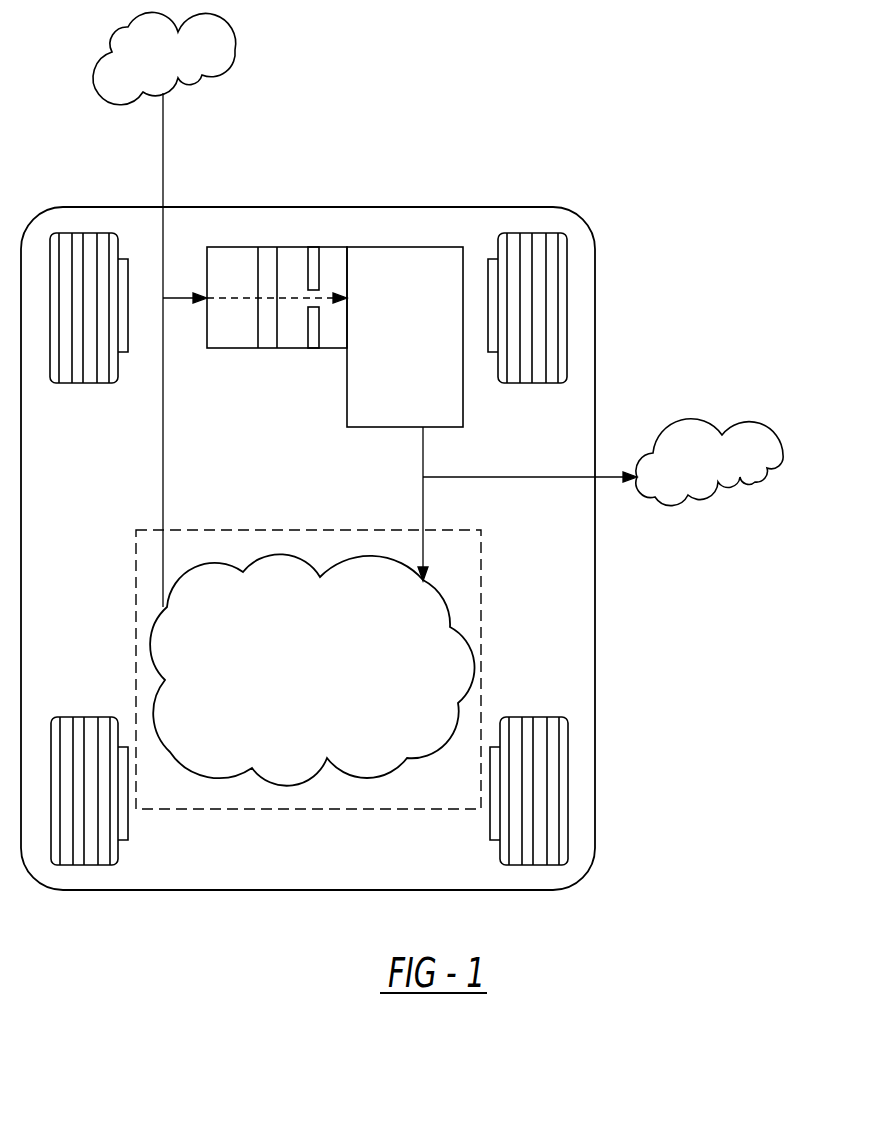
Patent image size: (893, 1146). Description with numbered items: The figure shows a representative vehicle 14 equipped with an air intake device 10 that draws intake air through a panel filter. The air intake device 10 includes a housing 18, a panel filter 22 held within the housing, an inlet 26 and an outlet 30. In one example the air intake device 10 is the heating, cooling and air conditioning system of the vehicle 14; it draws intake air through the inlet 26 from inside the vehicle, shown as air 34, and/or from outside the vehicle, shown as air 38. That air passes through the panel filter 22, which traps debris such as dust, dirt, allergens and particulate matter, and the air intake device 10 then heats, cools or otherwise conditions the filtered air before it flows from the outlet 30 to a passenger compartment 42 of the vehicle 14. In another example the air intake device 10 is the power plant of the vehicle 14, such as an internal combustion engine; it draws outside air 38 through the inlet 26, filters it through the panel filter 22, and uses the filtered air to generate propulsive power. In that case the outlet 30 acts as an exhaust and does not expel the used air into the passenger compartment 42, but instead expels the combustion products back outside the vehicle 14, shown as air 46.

The air intake device 10 is at (351, 237).
The vehicle 14 is at (488, 207).
The housing 18 is at (228, 350).
The panel filter 22 is at (265, 270).
The inlet 26 is at (208, 299).
The outlet 30 is at (423, 427).
The air 34 is at (230, 757).
The air 38 is at (125, 37).
The passenger compartment 42 is at (481, 592).
The air 46 is at (687, 437).